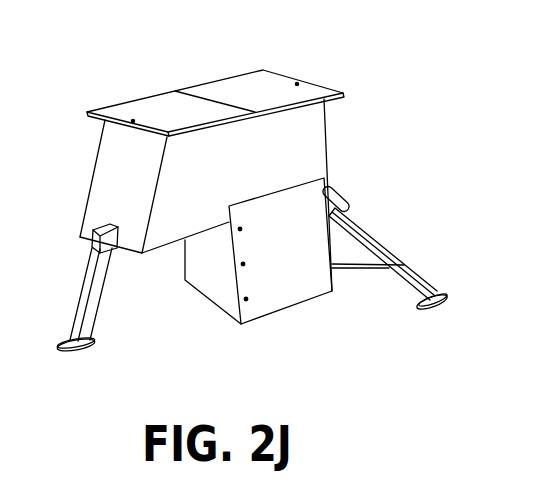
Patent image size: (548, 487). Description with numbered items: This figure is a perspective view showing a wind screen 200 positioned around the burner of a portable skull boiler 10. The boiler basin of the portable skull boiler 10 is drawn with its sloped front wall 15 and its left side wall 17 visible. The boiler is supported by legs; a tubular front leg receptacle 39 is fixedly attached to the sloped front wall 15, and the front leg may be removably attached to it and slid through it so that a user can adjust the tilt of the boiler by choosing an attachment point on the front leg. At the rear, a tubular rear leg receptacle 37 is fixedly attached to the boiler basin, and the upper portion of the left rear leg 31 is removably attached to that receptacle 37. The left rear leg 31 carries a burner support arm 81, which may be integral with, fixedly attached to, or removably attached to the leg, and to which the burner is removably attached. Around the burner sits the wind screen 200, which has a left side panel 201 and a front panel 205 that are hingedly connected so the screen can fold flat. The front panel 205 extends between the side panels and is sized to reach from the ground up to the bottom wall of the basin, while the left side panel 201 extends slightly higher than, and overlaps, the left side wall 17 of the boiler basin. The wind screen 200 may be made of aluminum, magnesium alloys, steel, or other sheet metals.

The portable skull boiler 10 is at (211, 155).
The sloped front wall 15 is at (112, 168).
The left side wall 17 is at (317, 152).
The tubular rear leg receptacle 37 is at (346, 200).
The left rear leg 31 is at (399, 258).
The burner support arm 81 is at (342, 270).
The tubular front leg receptacle 39 is at (88, 236).
The front panel 205 is at (193, 258).
The left side panel 201 is at (263, 305).
The wind screen 200 is at (235, 282).